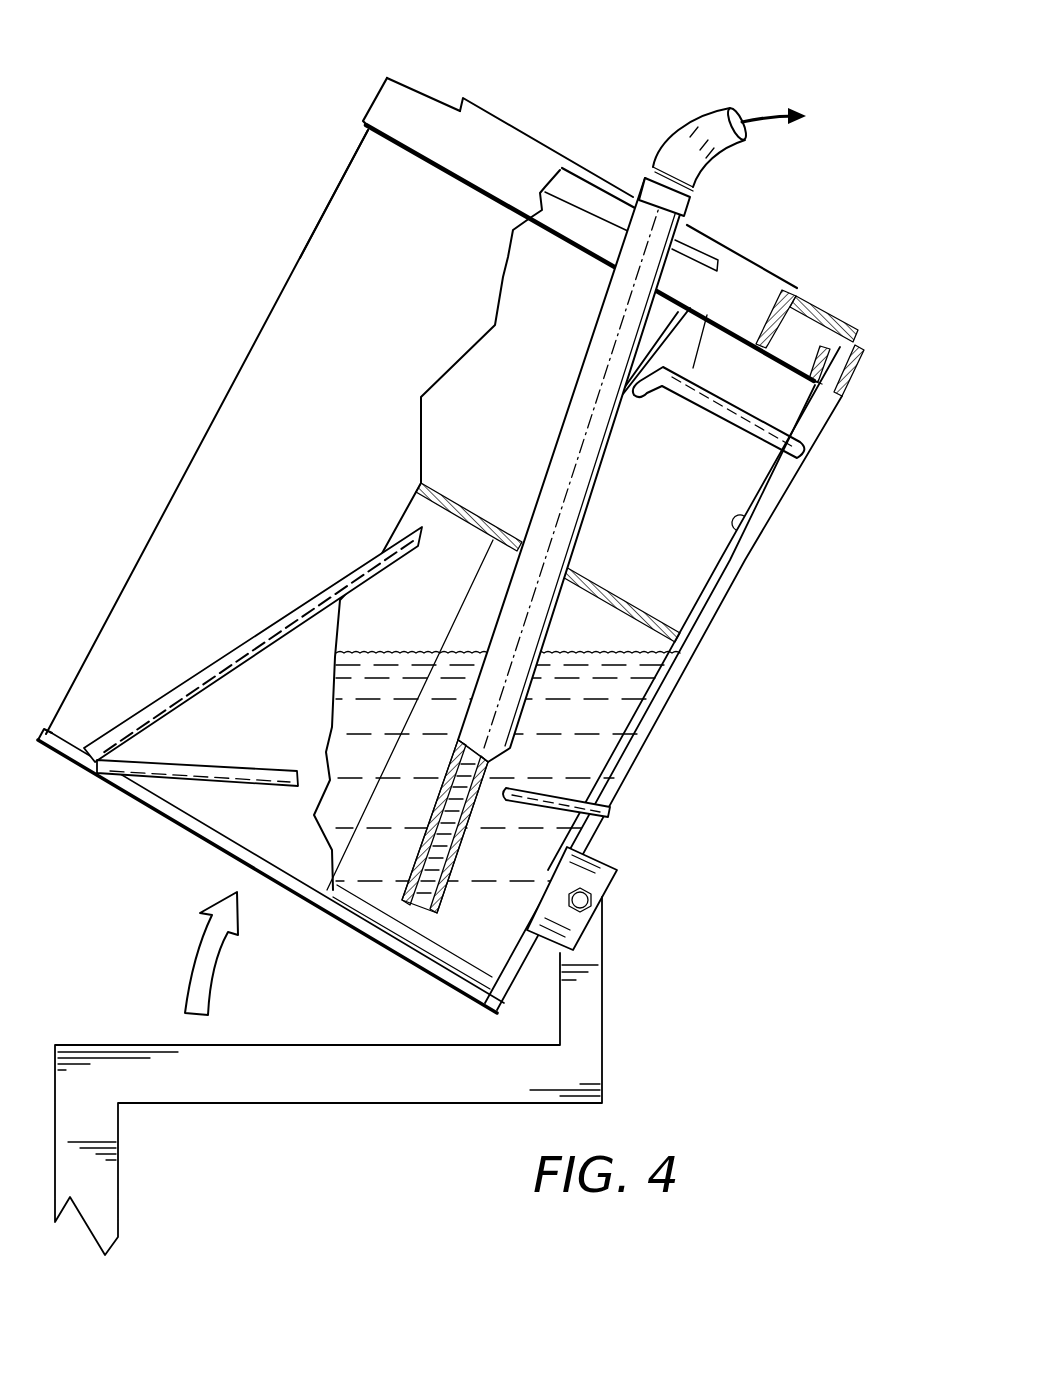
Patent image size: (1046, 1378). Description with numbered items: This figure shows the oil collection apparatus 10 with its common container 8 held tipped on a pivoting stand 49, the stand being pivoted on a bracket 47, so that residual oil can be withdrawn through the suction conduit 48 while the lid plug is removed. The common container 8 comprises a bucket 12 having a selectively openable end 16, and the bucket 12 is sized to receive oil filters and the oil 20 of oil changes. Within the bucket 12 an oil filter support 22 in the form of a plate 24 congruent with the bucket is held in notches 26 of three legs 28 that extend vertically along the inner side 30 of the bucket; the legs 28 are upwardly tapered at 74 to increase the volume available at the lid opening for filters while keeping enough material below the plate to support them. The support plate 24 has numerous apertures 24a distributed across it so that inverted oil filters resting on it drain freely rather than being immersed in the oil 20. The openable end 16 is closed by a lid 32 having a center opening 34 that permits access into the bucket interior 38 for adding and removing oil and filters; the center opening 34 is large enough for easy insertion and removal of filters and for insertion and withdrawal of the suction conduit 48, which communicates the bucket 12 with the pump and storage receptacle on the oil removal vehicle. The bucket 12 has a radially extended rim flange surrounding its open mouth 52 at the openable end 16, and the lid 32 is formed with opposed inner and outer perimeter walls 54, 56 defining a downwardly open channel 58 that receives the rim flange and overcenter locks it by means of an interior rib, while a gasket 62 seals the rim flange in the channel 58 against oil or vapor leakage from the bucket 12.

The common container 8 is at (140, 525).
The oil collection apparatus 10 is at (247, 263).
The bucket 12 is at (247, 355).
The selectively openable end 16 is at (388, 140).
The oil 20 is at (547, 817).
The oil filter support 22 is at (655, 585).
The support plate 24 is at (656, 615).
The apertures 24a is at (620, 590).
The notches 26 is at (523, 523).
The legs 28 is at (627, 423).
The inner side 30 is at (732, 538).
The lid 32 is at (742, 253).
The center opening 34 is at (777, 314).
The bucket interior 38 is at (708, 503).
The bracket 47 is at (368, 1070).
The conduit 48 is at (677, 133).
The stand 49 is at (153, 817).
The open mouth 52 is at (587, 233).
The inner perimeter wall 54 is at (850, 378).
The outer perimeter wall 56 is at (822, 352).
The channel 58 is at (827, 390).
The gasket 62 is at (853, 343).
The upwardly tapered portion 74 is at (537, 490).